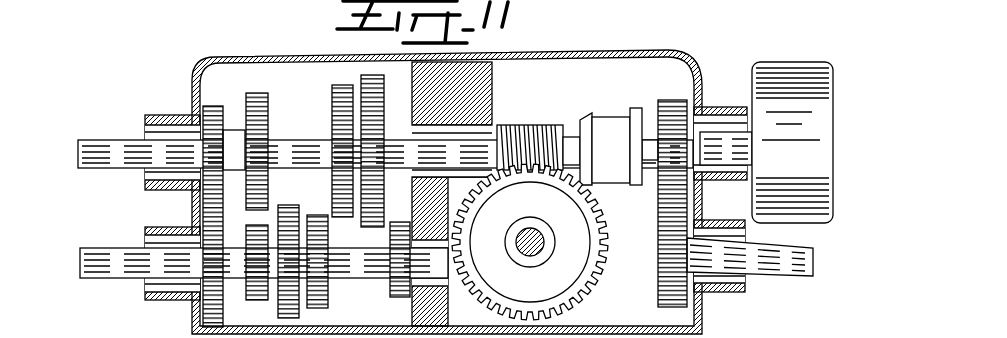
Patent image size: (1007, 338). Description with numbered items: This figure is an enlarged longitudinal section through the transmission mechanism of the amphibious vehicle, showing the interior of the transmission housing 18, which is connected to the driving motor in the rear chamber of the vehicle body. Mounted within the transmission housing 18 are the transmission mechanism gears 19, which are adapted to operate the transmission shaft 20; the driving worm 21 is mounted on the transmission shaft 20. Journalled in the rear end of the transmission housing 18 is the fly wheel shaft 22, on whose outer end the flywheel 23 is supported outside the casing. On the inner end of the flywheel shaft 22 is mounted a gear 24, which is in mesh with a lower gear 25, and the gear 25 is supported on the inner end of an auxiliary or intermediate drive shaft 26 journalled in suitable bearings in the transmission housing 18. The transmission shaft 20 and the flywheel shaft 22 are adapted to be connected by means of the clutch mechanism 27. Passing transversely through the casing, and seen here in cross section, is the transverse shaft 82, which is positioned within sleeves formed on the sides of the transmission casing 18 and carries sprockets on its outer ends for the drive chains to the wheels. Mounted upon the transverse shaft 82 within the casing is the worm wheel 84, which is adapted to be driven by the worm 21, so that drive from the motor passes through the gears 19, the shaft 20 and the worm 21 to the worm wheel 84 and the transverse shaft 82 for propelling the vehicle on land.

The transmission housing 18 is at (262, 45).
The transmission mechanism gears 19 is at (337, 122).
The transmission shaft 20 is at (447, 143).
The driving worm 21 is at (527, 133).
The fly wheel shaft 22 is at (711, 147).
The flywheel 23 is at (787, 90).
The gear 24 is at (670, 101).
The lower gear 25 is at (551, 242).
The auxiliary or intermediate drive shaft 26 is at (778, 258).
The clutch mechanism 27 is at (609, 135).
The transverse shaft 82 is at (540, 253).
The worm wheel 84 is at (573, 222).